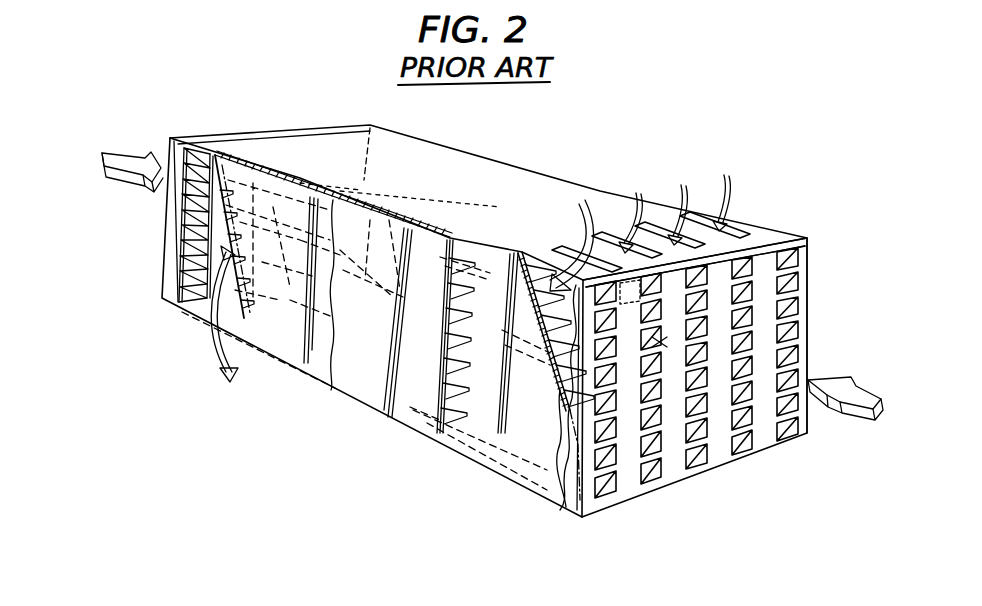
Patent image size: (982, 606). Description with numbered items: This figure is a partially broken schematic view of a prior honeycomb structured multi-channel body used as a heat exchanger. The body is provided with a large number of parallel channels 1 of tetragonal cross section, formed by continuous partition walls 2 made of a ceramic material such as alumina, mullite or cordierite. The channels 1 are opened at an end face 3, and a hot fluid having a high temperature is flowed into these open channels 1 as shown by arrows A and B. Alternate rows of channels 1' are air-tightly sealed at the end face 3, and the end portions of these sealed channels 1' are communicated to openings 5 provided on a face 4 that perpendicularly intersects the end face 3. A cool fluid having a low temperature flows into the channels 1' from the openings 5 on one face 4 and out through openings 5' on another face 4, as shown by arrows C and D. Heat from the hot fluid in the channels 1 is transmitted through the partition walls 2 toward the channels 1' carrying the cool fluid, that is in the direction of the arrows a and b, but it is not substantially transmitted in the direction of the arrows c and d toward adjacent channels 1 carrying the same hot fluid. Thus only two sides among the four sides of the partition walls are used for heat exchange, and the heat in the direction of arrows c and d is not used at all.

The channels 1 is at (695, 301).
The sealed channels 1' is at (642, 202).
The partition walls 2 is at (653, 470).
The end face 3 is at (262, 133).
The face 4 is at (372, 397).
The openings 5 is at (526, 284).
The openings 5' is at (245, 276).
The arrow a is at (645, 342).
The arrow b is at (653, 365).
The arrow c is at (644, 371).
The arrow d is at (653, 320).
The arrow A is at (830, 385).
The arrow B is at (125, 167).
The arrow C is at (582, 230).
The arrow D is at (221, 349).